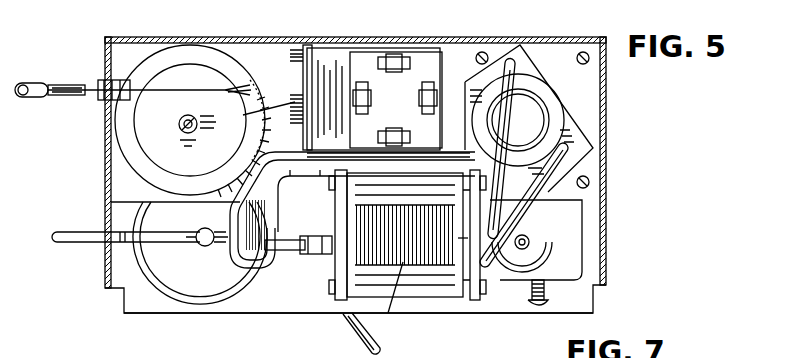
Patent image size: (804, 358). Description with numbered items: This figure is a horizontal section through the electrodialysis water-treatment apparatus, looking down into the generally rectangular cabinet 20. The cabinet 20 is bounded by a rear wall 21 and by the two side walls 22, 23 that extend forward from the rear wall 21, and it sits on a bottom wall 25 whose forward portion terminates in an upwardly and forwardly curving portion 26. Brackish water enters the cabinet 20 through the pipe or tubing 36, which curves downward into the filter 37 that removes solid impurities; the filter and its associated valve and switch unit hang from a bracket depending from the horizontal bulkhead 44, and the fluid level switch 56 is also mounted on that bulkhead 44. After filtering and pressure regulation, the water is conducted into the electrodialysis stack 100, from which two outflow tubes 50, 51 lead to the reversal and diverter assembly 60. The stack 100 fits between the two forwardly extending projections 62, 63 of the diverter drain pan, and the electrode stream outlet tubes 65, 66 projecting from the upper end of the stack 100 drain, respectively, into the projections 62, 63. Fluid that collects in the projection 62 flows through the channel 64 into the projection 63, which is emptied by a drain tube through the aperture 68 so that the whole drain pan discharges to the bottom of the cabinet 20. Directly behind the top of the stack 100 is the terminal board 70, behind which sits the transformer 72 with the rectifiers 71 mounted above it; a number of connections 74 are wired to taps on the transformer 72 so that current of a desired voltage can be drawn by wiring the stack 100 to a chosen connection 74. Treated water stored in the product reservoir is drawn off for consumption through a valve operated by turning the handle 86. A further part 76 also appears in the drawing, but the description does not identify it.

The cabinet 20 is at (356, 172).
The rear wall 21 is at (275, 40).
The side wall 22 is at (107, 212).
The side wall 23 is at (606, 152).
The bottom wall 25 is at (316, 298).
The upwardly and forwardly curving portion 26 is at (422, 306).
The pipe or tubing 36 is at (96, 242).
The filter 37 is at (214, 271).
The horizontal bulkhead 44 is at (290, 93).
The outflow tube 50 is at (494, 282).
The outflow tube 51 is at (518, 120).
The fluid level switch 56 is at (158, 172).
The reversal and diverter assembly 60 is at (581, 104).
The forwardly extending projection 62 is at (266, 223).
The forwardly extending projection 63 is at (550, 228).
The channel 64 is at (296, 170).
The electrode stream outlet tube 65 is at (298, 255).
The electrode stream outlet tube 66 is at (458, 241).
The aperture 68 is at (528, 239).
The terminal board 70 is at (306, 140).
The rectifiers 71 is at (396, 126).
The transformer 72 is at (328, 152).
The connections 74 is at (246, 117).
The lever arm 76 is at (538, 106).
The handle 86 is at (350, 342).
The electrodialysis stack 100 is at (396, 298).